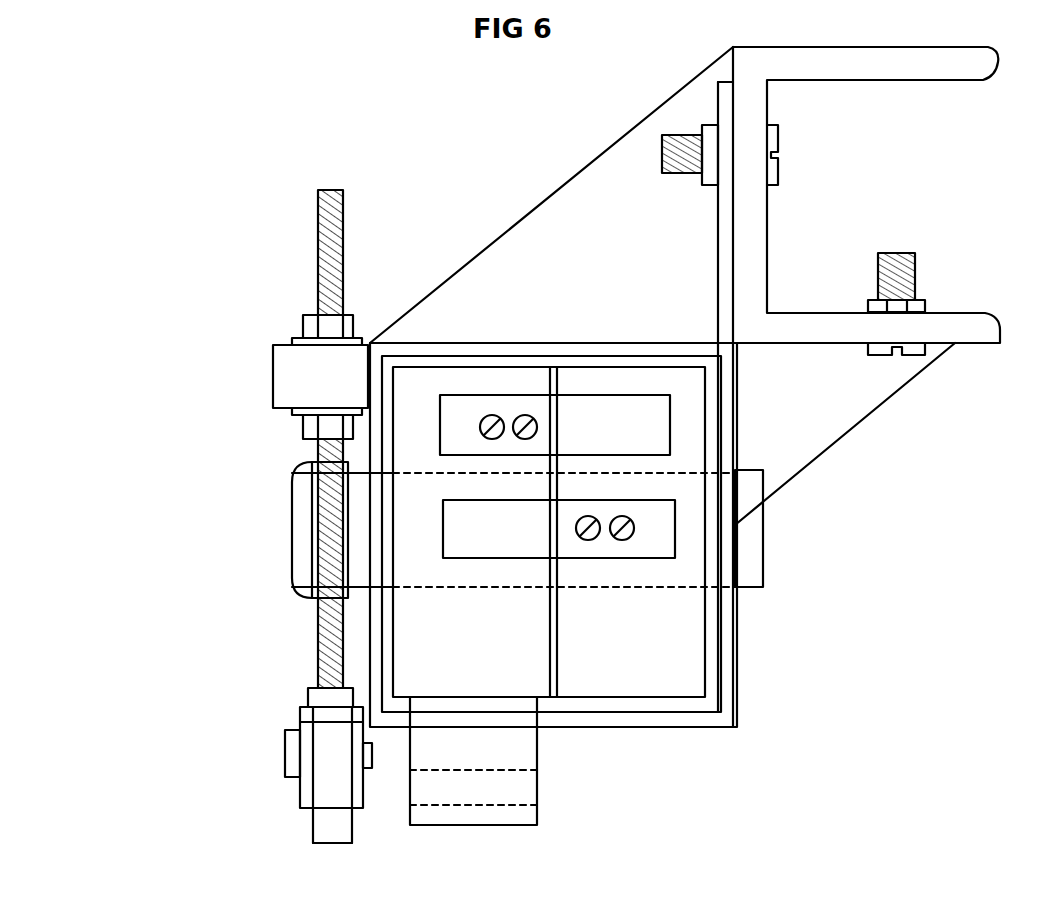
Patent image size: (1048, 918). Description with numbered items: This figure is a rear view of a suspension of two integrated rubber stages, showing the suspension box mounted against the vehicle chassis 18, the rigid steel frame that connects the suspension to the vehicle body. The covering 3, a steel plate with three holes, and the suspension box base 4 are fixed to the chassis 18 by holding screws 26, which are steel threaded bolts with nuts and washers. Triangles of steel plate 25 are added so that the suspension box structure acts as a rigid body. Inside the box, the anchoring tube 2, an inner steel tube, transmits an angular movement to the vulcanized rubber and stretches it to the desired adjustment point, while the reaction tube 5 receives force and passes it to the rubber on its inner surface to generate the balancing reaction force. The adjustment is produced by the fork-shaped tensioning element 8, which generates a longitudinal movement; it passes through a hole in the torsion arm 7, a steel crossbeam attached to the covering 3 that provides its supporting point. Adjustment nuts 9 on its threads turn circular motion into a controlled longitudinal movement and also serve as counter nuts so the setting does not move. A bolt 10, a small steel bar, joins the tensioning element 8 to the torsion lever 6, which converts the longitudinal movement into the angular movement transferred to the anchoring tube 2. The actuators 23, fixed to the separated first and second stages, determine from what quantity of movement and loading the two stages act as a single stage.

The anchoring tube 2 is at (280, 532).
The covering 3 is at (637, 561).
The suspension box base 4 is at (748, 428).
The reaction tube 5 is at (370, 633).
The torsion lever 6 is at (300, 664).
The torsion arm 7 is at (262, 379).
The fork-shaped tensioning element 8 is at (302, 249).
The adjustment nuts 9 is at (282, 330).
The bolt 10 is at (272, 753).
The vehicle chassis 18 is at (780, 97).
The actuators 23 is at (690, 526).
The triangles of steel plate 25 is at (540, 190).
The holding screws 26 is at (895, 236).